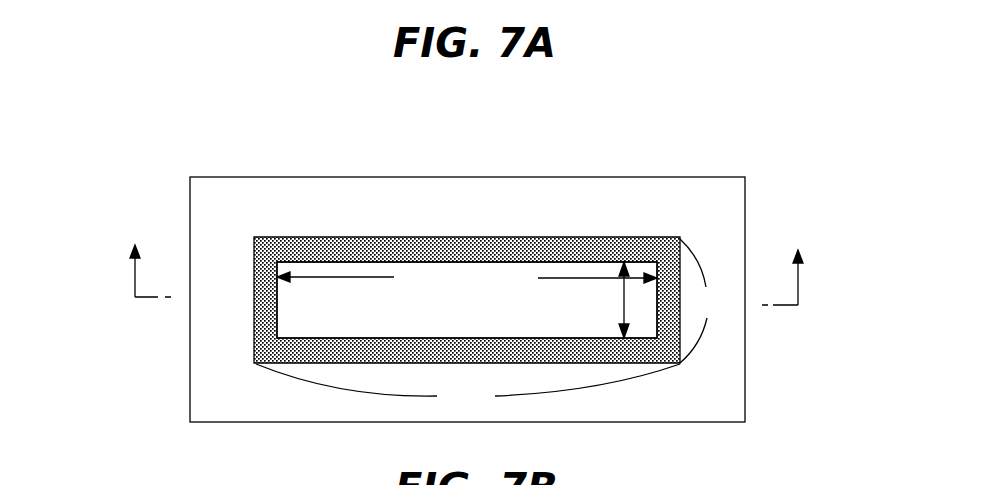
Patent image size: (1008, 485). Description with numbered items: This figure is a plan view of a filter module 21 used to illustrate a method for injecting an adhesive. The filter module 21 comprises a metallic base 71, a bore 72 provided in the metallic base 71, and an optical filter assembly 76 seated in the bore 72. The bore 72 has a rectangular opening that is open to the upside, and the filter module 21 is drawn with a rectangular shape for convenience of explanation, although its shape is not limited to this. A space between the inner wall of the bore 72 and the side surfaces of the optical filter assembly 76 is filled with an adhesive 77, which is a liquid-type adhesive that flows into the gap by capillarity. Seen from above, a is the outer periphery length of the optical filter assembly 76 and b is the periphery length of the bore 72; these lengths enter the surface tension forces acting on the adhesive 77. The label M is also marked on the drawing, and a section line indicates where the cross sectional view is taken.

The filter module 21 is at (685, 138).
The metallic base 71 is at (225, 395).
The bore 72 is at (253, 330).
The optical filter assembly 76 is at (412, 262).
The adhesive 77 is at (482, 245).
The mounting surface M is at (302, 245).
The outer periphery length of the optical filter assembly a is at (602, 265).
The periphery length of the bore b is at (552, 238).